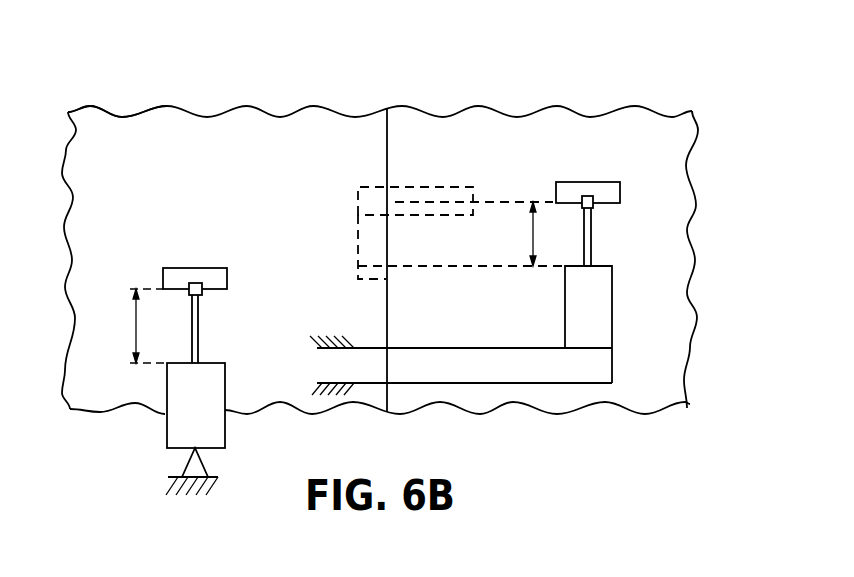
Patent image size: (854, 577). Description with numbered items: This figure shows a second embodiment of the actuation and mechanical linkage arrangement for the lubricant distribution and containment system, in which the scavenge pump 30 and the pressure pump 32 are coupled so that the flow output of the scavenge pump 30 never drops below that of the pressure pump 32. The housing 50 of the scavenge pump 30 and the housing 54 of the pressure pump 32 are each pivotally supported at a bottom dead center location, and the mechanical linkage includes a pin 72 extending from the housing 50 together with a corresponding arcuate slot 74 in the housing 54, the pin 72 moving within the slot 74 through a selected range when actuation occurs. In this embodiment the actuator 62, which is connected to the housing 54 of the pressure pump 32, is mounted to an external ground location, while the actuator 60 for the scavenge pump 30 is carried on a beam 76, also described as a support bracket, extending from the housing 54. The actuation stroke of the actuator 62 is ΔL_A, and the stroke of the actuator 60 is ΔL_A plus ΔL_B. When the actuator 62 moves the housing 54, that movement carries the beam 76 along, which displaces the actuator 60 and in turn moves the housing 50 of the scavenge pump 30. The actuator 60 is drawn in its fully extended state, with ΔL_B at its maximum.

The scavenge pump 30 is at (518, 98).
The pressure pump 32 is at (210, 98).
The housing 50 is at (672, 172).
The housing 54 is at (130, 130).
The actuator 60 is at (595, 310).
The actuator 62 is at (212, 432).
The pin 72 is at (420, 192).
The arcuate slot 74 is at (359, 244).
The beam 76 is at (537, 372).